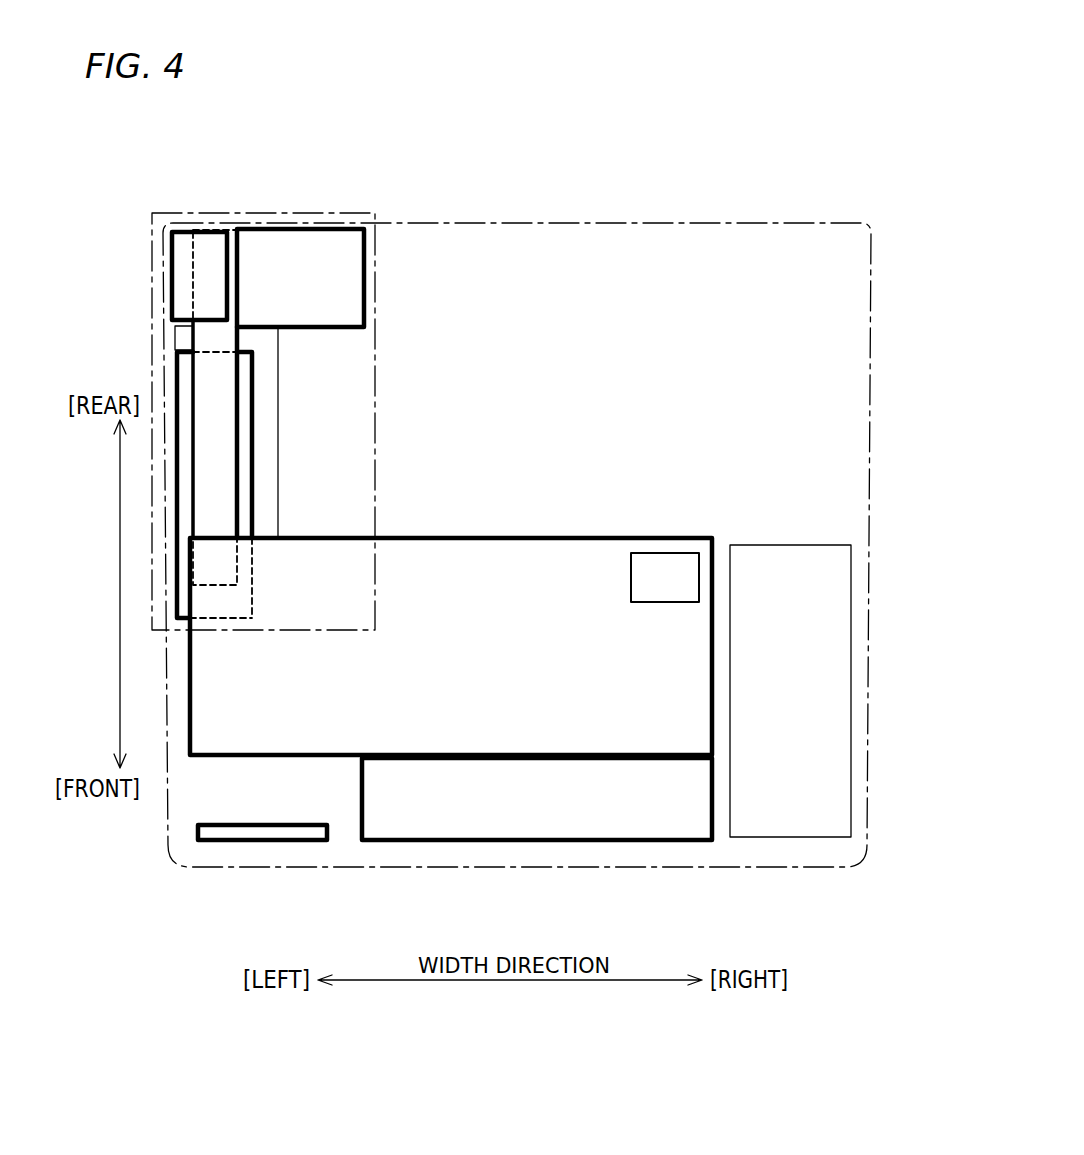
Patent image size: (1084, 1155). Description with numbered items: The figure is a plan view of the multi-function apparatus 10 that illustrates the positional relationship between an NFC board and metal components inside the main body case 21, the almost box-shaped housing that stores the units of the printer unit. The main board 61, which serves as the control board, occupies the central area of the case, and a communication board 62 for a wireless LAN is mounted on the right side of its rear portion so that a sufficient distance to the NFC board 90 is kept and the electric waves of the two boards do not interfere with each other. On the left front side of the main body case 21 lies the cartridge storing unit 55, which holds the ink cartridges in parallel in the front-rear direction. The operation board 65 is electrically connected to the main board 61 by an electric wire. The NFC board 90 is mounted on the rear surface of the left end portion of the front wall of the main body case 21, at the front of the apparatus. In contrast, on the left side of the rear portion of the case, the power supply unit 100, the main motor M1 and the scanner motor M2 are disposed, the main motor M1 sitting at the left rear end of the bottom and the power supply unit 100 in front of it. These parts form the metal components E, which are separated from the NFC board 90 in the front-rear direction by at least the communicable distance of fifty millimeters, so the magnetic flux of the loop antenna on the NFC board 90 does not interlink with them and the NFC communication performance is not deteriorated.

The multi-function apparatus 10 is at (539, 489).
The main body case 21 is at (873, 415).
The main board 61 is at (503, 563).
The communication board for a wireless LAN 62 is at (688, 580).
The cartridge storing unit 55 is at (815, 757).
The operation board 65 is at (538, 818).
The NFC board 90 is at (260, 832).
The power supply unit 100 is at (185, 375).
The main motor M1 is at (297, 243).
The scanner motor M2 is at (179, 231).
The metal components E is at (374, 268).